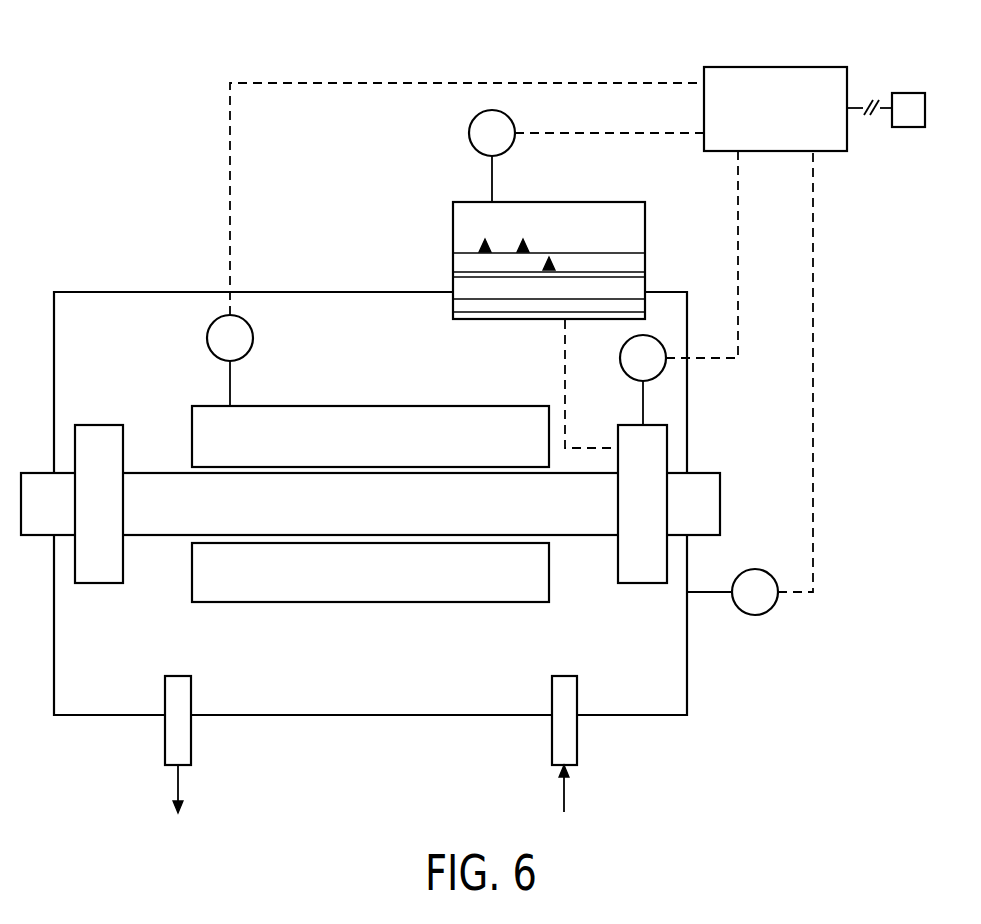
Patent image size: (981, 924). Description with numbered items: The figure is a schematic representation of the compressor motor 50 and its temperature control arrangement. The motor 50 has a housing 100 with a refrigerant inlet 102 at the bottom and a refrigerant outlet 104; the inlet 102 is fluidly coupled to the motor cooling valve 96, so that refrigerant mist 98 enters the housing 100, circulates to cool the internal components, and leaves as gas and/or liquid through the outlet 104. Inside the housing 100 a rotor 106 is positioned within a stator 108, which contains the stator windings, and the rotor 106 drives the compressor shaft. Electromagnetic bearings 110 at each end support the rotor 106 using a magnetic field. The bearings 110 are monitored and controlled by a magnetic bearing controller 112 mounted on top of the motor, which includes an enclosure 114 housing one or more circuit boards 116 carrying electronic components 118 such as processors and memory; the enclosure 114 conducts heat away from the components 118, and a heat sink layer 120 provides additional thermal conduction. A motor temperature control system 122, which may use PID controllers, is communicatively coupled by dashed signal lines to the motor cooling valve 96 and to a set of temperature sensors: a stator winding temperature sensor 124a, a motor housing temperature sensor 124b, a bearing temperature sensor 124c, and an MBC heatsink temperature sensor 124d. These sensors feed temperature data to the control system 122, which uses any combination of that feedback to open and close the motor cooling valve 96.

The motor 50 is at (215, 40).
The motor cooling valve 96 is at (907, 93).
The refrigerant mist 98 is at (566, 797).
The housing 100 is at (688, 675).
The refrigerant inlet 102 is at (577, 733).
The refrigerant outlet 104 is at (191, 733).
The rotor 106 is at (160, 473).
The stator 108 is at (372, 406).
The electromagnetic bearings 110 is at (668, 455).
The magnetic bearing controller 112 is at (546, 267).
The enclosure 114 is at (453, 230).
The circuit boards 116 is at (620, 238).
The electronic components 118 is at (525, 247).
The heat sink layer 120 is at (510, 305).
The motor temperature control system 122 is at (775, 67).
The stator winding temperature sensor 124a is at (252, 331).
The motor housing temperature sensor 124b is at (772, 610).
The bearing temperature sensor 124c is at (660, 341).
The MBC heatsink temperature sensor 124d is at (476, 117).